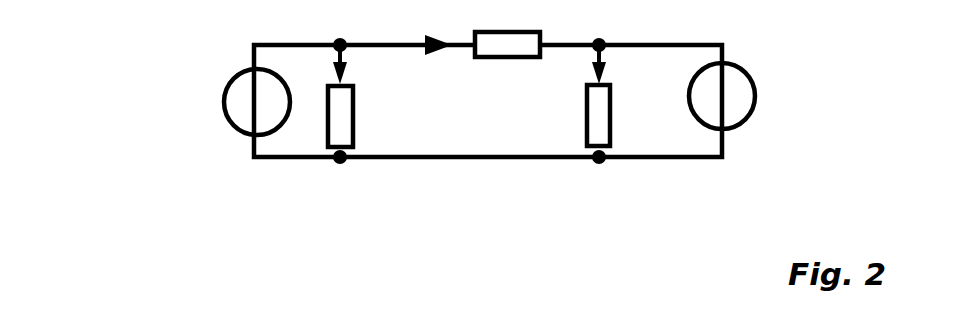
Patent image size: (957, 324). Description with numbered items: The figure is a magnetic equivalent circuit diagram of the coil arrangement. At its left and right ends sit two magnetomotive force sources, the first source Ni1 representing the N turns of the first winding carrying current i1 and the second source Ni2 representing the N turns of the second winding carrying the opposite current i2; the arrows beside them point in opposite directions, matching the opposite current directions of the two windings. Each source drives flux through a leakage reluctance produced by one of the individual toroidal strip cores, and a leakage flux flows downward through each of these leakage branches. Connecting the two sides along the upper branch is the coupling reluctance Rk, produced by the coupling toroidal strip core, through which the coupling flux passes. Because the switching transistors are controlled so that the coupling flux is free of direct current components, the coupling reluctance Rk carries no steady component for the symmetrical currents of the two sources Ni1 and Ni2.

The magnetomotive force of the first winding Ni1 is at (218, 58).
The magnetomotive force of the second winding Ni2 is at (763, 52).
The coupling reluctance Rk is at (507, 70).